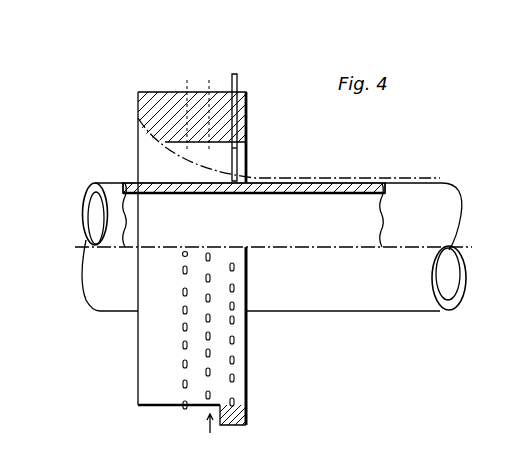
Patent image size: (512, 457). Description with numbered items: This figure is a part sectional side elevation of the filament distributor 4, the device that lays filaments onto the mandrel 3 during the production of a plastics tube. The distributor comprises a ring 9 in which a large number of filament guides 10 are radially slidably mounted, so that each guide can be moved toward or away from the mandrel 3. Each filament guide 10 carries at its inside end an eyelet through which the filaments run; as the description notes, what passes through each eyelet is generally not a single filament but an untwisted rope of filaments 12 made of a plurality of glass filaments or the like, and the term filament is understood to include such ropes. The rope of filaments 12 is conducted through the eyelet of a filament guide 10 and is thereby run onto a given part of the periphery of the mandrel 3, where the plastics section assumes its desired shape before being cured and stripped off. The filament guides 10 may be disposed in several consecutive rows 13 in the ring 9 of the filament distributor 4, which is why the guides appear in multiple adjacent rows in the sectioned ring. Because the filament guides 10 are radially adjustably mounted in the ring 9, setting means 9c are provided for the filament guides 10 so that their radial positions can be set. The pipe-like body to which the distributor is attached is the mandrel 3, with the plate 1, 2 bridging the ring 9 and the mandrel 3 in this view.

The plate 1 is at (254, 188).
The wall of pipe 2 is at (340, 183).
The mandrel 3 is at (410, 197).
The filament distributor 4 is at (108, 402).
The ring 9 is at (146, 338).
The setting means 9c is at (242, 425).
The filament guide 10 is at (238, 150).
The rope of filaments 12 is at (140, 132).
The rows of filament guides 13 is at (209, 84).